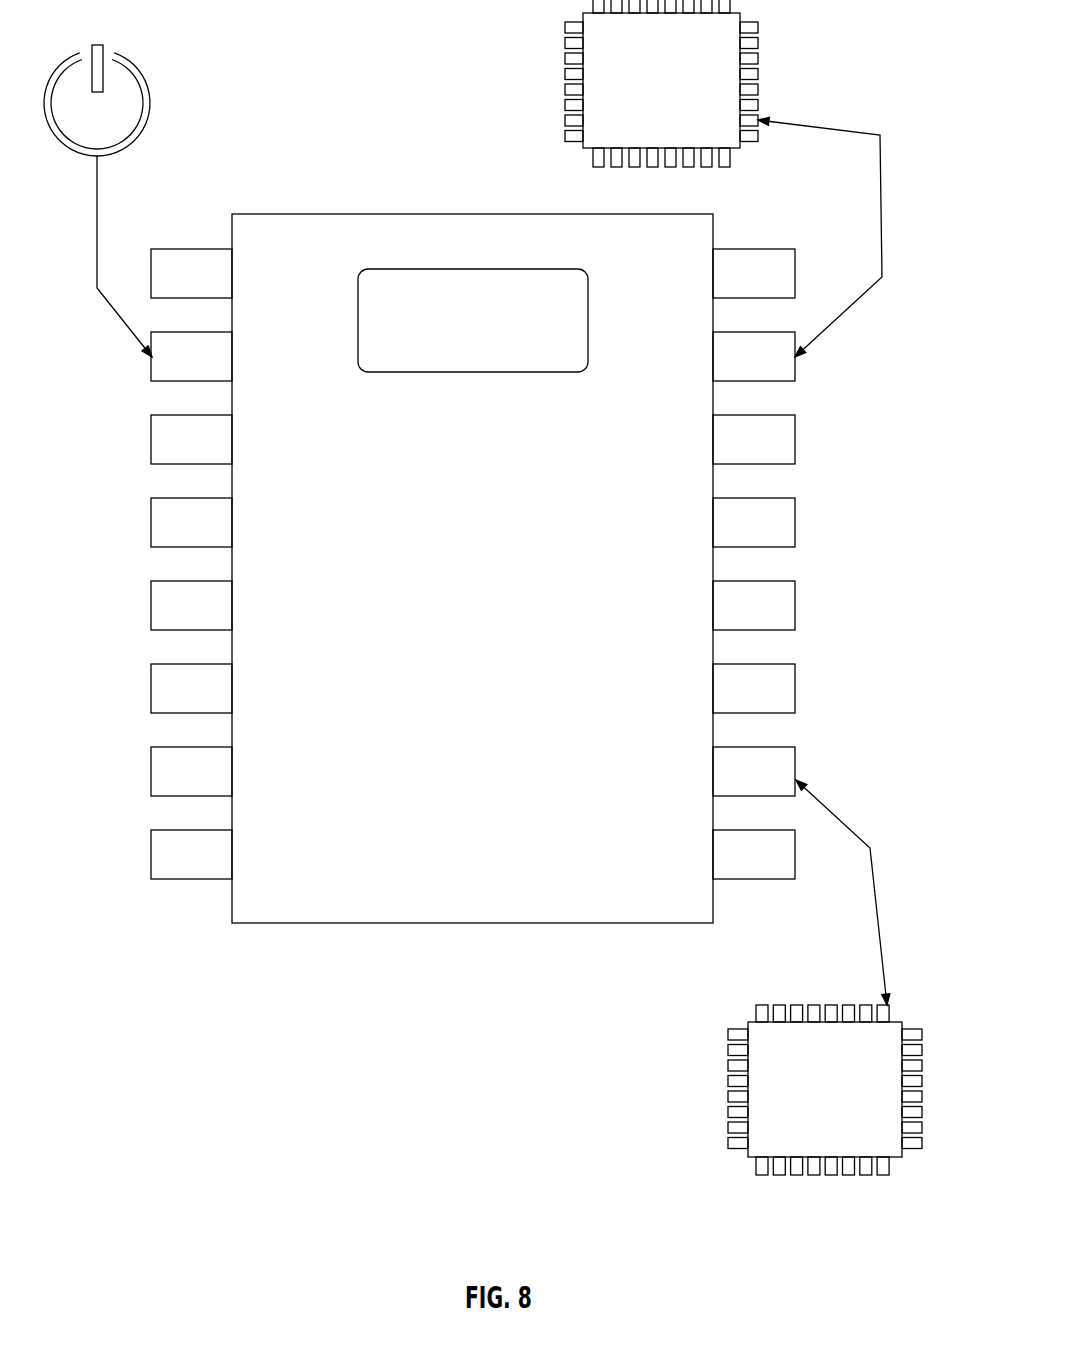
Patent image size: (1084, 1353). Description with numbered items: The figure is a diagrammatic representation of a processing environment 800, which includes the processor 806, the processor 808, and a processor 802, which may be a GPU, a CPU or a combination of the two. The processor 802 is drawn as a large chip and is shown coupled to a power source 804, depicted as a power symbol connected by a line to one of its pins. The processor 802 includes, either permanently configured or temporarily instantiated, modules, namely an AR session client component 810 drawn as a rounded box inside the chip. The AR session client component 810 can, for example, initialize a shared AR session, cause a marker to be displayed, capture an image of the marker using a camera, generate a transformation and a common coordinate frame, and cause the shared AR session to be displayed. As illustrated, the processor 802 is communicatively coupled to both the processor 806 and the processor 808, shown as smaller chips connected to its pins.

The processing environment 800 is at (877, 80).
The processor 802 is at (794, 581).
The power source 804 is at (152, 110).
The processor 806 is at (677, 112).
The processor 808 is at (842, 1118).
The AR session client component 810 is at (588, 325).